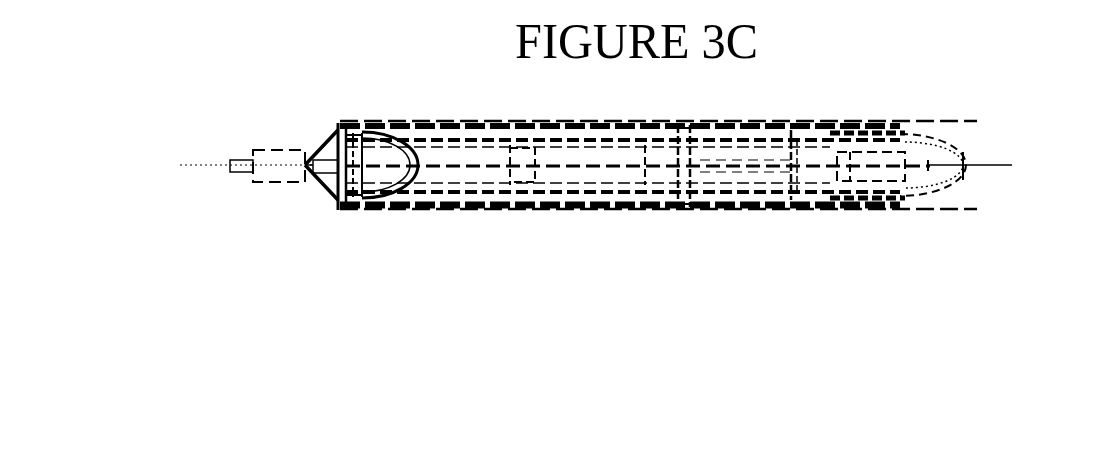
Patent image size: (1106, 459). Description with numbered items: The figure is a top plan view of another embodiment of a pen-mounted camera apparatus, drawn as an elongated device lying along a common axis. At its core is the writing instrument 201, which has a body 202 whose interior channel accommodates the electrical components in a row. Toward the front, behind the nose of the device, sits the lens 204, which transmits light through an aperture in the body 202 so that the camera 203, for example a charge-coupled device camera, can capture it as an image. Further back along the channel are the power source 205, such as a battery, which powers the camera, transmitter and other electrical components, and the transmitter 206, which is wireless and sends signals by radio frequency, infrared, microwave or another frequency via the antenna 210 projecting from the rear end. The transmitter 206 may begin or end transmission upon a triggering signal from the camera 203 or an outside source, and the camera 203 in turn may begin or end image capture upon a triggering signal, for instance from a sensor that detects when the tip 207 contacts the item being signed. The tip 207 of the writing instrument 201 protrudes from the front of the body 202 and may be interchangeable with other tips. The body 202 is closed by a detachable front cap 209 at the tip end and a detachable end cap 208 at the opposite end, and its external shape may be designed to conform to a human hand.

The writing instrument 201 is at (482, 188).
The body 202 is at (653, 188).
The camera 203 is at (802, 177).
The lens 204 is at (308, 180).
The power source 205 is at (762, 458).
The transmitter 206 is at (863, 175).
The tip 207 is at (260, 177).
The end cap 208 is at (923, 175).
The front cap 209 is at (322, 188).
The antenna 210 is at (988, 165).